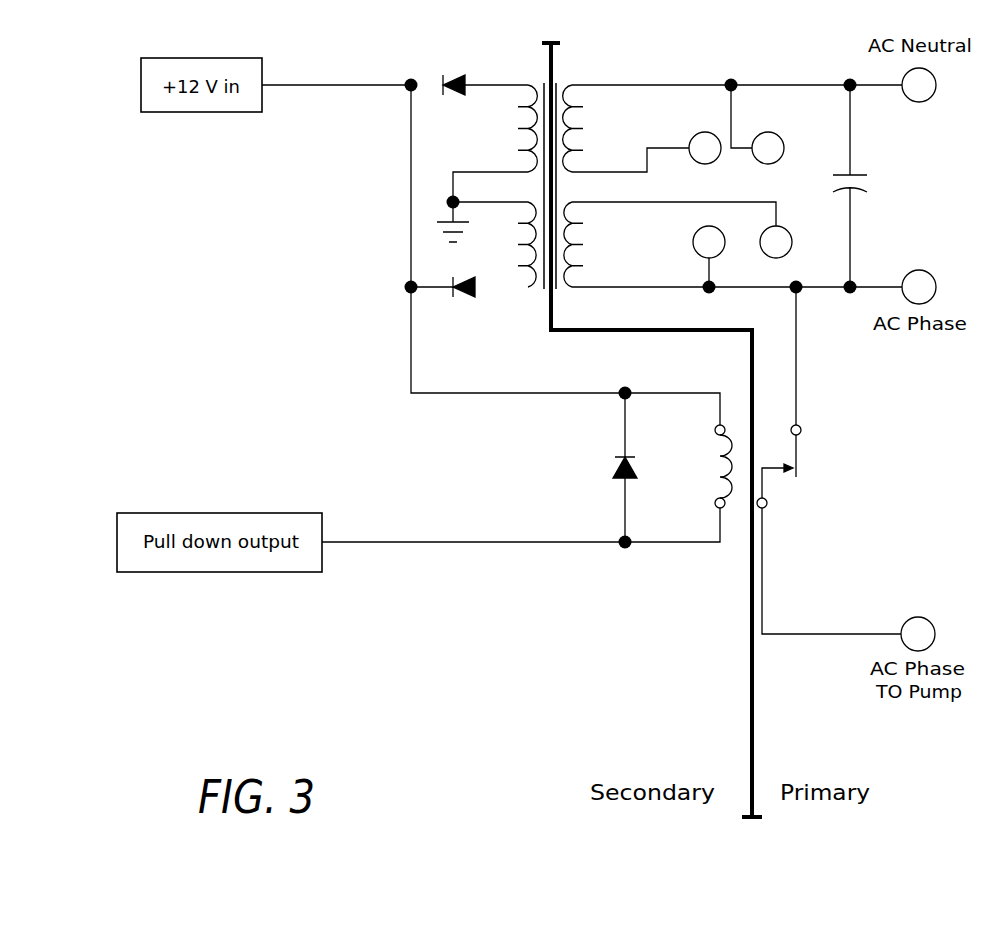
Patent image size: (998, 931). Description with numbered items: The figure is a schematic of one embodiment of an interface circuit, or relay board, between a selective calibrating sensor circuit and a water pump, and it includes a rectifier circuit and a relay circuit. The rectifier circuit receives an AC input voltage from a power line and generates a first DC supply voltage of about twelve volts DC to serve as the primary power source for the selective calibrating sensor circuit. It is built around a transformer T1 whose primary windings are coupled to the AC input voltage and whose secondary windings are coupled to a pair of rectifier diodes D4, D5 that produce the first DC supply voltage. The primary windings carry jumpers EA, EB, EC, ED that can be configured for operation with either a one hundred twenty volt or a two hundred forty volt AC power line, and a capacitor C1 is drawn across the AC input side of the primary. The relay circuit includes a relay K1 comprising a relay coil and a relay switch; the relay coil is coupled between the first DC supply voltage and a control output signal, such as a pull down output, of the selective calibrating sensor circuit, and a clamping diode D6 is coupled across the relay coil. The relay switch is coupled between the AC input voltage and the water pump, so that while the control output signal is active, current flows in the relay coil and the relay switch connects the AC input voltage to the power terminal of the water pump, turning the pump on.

The transformer T1 is at (550, 170).
The rectifier diode D4 is at (456, 98).
The rectifier diode D5 is at (448, 277).
The clamping diode D6 is at (634, 467).
The relay K1 is at (709, 464).
The capacitor C1 is at (866, 186).
The jumper EA is at (768, 148).
The jumper EB is at (705, 148).
The jumper EC is at (776, 242).
The jumper ED is at (709, 242).